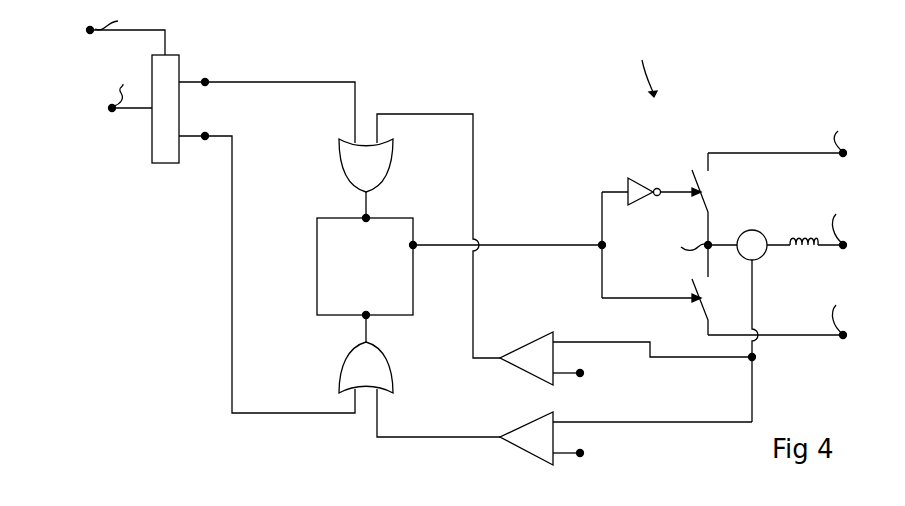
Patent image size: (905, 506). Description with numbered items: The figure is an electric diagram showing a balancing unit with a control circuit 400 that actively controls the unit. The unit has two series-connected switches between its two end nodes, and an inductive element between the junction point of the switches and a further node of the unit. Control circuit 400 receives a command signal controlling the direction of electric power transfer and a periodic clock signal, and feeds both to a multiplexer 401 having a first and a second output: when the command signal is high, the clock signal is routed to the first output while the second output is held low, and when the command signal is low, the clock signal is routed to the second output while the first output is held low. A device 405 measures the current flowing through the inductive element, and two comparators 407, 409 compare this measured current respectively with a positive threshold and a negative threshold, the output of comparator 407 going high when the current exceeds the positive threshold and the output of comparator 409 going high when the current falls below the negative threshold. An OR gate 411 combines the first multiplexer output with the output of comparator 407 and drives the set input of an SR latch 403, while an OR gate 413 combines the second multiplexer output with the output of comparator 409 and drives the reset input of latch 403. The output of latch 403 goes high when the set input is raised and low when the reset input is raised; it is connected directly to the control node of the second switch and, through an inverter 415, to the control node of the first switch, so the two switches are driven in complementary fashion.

The control circuit 400 is at (527, 121).
The multiplexer 401 is at (179, 63).
The SR latch 403 is at (317, 245).
The current measuring device 405 is at (752, 230).
The comparator 407 is at (525, 343).
The comparator 409 is at (528, 421).
The OR gate 411 is at (340, 160).
The OR gate 413 is at (340, 371).
The inverter 415 is at (645, 185).